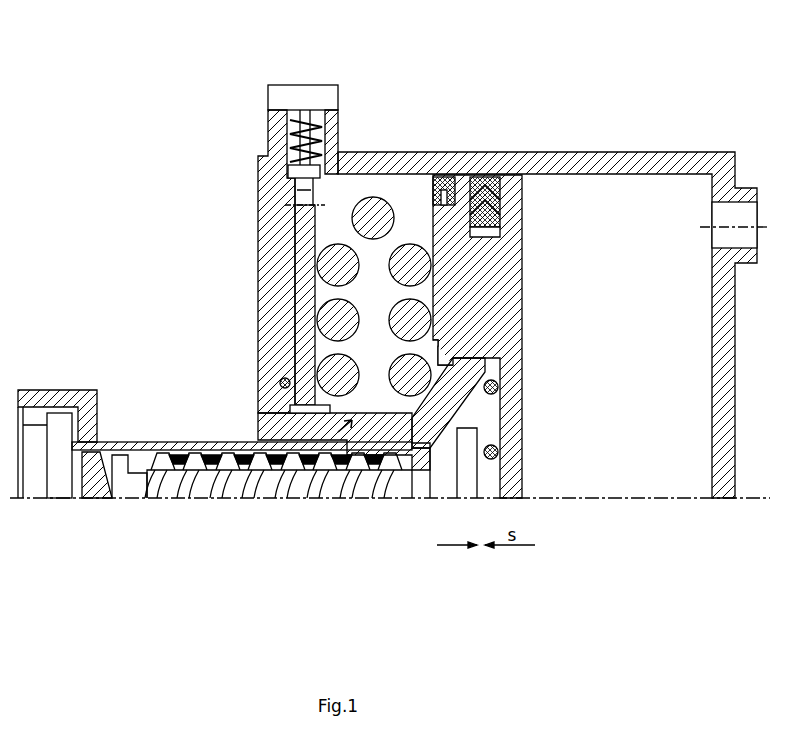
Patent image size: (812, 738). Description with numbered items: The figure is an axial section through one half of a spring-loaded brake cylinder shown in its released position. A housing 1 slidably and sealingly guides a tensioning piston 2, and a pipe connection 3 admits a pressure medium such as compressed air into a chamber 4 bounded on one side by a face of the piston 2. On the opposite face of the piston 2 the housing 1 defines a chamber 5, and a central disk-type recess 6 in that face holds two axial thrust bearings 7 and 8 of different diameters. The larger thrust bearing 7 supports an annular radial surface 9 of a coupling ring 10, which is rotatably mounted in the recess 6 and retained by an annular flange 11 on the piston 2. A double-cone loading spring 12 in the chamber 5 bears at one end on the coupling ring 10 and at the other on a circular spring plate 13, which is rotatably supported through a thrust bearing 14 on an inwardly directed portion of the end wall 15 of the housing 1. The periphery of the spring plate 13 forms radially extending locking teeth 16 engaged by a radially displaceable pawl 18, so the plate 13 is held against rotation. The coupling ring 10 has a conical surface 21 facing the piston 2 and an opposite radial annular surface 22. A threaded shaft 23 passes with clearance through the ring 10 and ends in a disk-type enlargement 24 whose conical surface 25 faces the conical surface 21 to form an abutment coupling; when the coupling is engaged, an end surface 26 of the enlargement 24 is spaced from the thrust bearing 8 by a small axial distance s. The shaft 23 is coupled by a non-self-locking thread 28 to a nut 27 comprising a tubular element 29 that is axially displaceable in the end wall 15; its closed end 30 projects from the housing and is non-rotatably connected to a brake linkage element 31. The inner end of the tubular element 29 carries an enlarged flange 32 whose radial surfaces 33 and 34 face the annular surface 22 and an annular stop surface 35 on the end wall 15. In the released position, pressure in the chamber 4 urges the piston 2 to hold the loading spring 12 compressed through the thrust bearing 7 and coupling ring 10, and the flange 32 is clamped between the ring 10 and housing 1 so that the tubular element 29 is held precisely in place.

The housing 1 is at (637, 160).
The tensioning piston 2 is at (500, 313).
The pipe connection 3 is at (727, 218).
The chamber 4 is at (681, 210).
The chamber 5 is at (413, 200).
The recess 6 is at (492, 477).
The thrust bearing 7 is at (497, 386).
The thrust bearing 8 is at (498, 452).
The annular radial surface 9 is at (487, 360).
The coupling ring 10 is at (500, 370).
The annular flange 11 is at (440, 362).
The loading spring 12 is at (373, 216).
The spring plate 13 is at (303, 257).
The thrust bearing 14 is at (284, 383).
The end wall 15 is at (273, 295).
The locking teeth 16 is at (297, 207).
The pawl 18 is at (303, 158).
The conical surface 21 is at (485, 408).
The radial annular surface 22 is at (395, 470).
The threaded shaft 23 is at (190, 487).
The disk-type enlargement 24 is at (463, 487).
The conical surface 25 is at (440, 483).
The end surface 26 is at (500, 467).
The nut 27 is at (207, 447).
The non-self-locking thread 28 is at (250, 470).
The tubular element 29 is at (125, 446).
The closed end 30 is at (77, 481).
The brake linkage element 31 is at (65, 395).
The enlarged flange 32 is at (375, 433).
The radial surface 33 is at (427, 470).
The radial surface 34 is at (325, 458).
The annular stop surface 35 is at (362, 458).